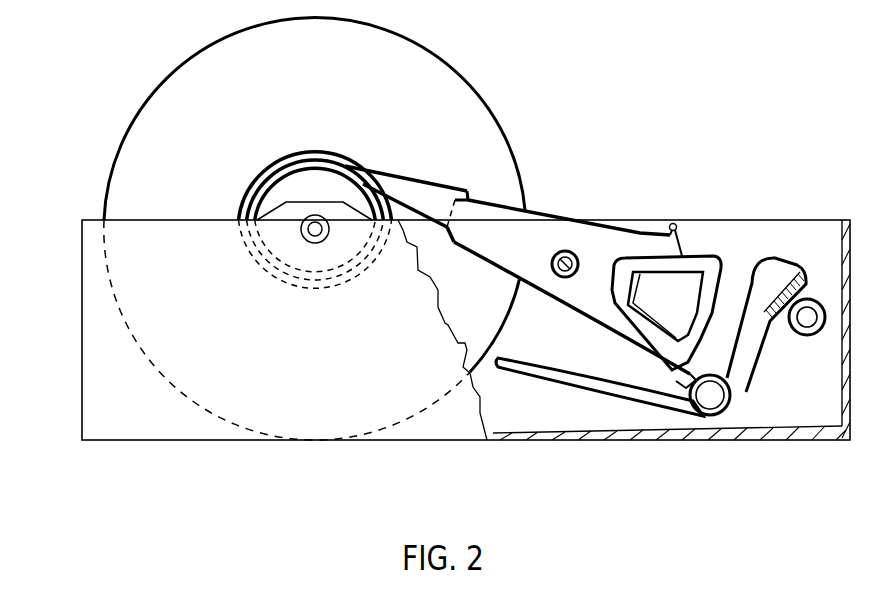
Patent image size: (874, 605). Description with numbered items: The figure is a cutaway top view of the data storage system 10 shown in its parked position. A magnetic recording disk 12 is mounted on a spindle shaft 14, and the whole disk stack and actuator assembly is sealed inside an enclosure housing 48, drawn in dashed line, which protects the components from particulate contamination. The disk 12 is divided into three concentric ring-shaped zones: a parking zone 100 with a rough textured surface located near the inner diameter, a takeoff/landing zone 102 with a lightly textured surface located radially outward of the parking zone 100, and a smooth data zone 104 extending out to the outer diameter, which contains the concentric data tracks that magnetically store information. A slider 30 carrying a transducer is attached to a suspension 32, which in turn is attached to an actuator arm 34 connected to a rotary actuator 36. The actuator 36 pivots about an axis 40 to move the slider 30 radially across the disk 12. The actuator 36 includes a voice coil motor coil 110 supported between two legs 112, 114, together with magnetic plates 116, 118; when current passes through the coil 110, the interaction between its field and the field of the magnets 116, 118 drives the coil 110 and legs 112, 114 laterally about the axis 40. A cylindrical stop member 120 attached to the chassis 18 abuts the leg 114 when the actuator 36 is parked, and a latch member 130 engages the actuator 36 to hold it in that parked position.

The data storage system 10 is at (275, 490).
The magnetic recording disk 12 is at (207, 72).
The spindle shaft 14 is at (311, 236).
The chassis 18 is at (790, 219).
The slider 30 is at (353, 170).
The suspension 32 is at (400, 190).
The actuator arm 34 is at (487, 217).
The rotary actuator 36 is at (617, 263).
The axis 40 is at (558, 248).
The enclosure housing 48 is at (82, 355).
The parking zone 100 is at (333, 167).
The takeoff/landing zone 102 is at (240, 198).
The data zone 104 is at (258, 125).
The voice coil motor coil 110 is at (690, 262).
The leg 112 is at (613, 332).
The leg 114 is at (647, 242).
The magnetic plate 116 is at (607, 362).
The magnetic plate 118 is at (694, 292).
The cylindrical stop member 120 is at (676, 223).
The latch member 130 is at (620, 390).